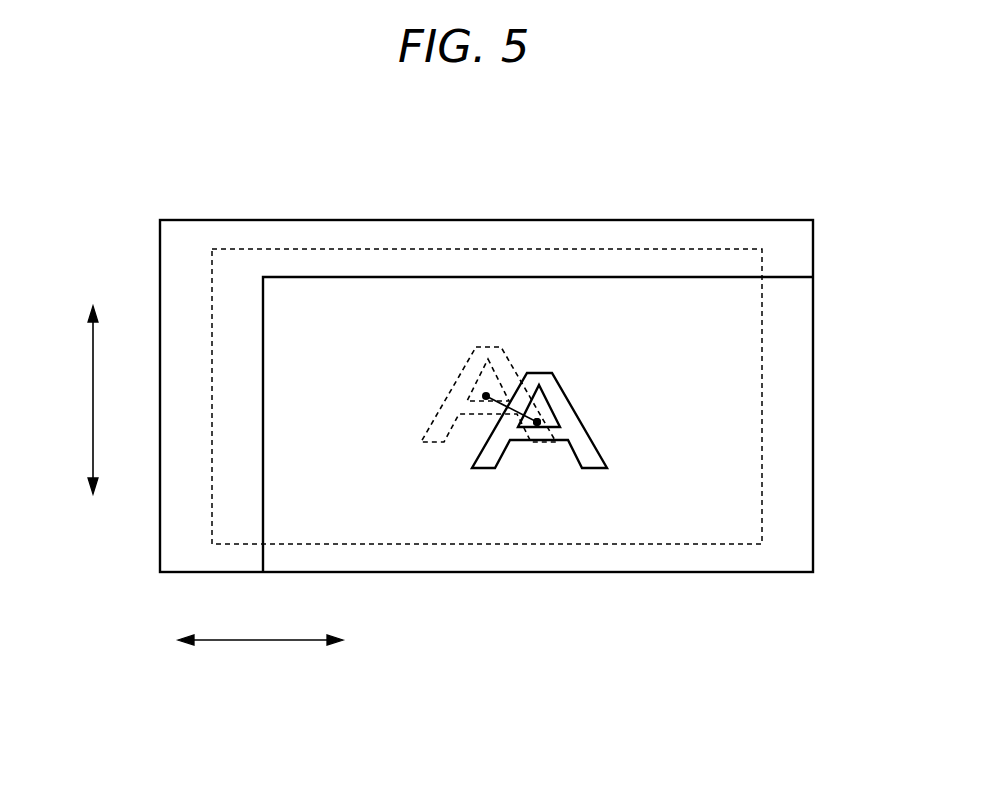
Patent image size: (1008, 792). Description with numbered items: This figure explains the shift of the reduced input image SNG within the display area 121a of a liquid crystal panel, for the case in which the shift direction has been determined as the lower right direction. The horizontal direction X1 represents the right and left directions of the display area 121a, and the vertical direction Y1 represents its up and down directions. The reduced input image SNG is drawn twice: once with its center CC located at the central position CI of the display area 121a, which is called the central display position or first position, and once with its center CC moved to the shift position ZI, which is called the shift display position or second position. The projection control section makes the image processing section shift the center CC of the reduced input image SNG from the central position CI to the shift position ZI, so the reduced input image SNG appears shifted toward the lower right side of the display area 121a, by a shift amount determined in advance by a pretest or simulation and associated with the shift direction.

The display area 121a is at (683, 220).
The reduced input image SNG is at (428, 248).
The center of the reduced input image CC is at (537, 422).
The central position CI is at (486, 396).
The shift position ZI is at (537, 424).
The vertical direction Y1 is at (93, 388).
The horizontal direction X1 is at (258, 640).